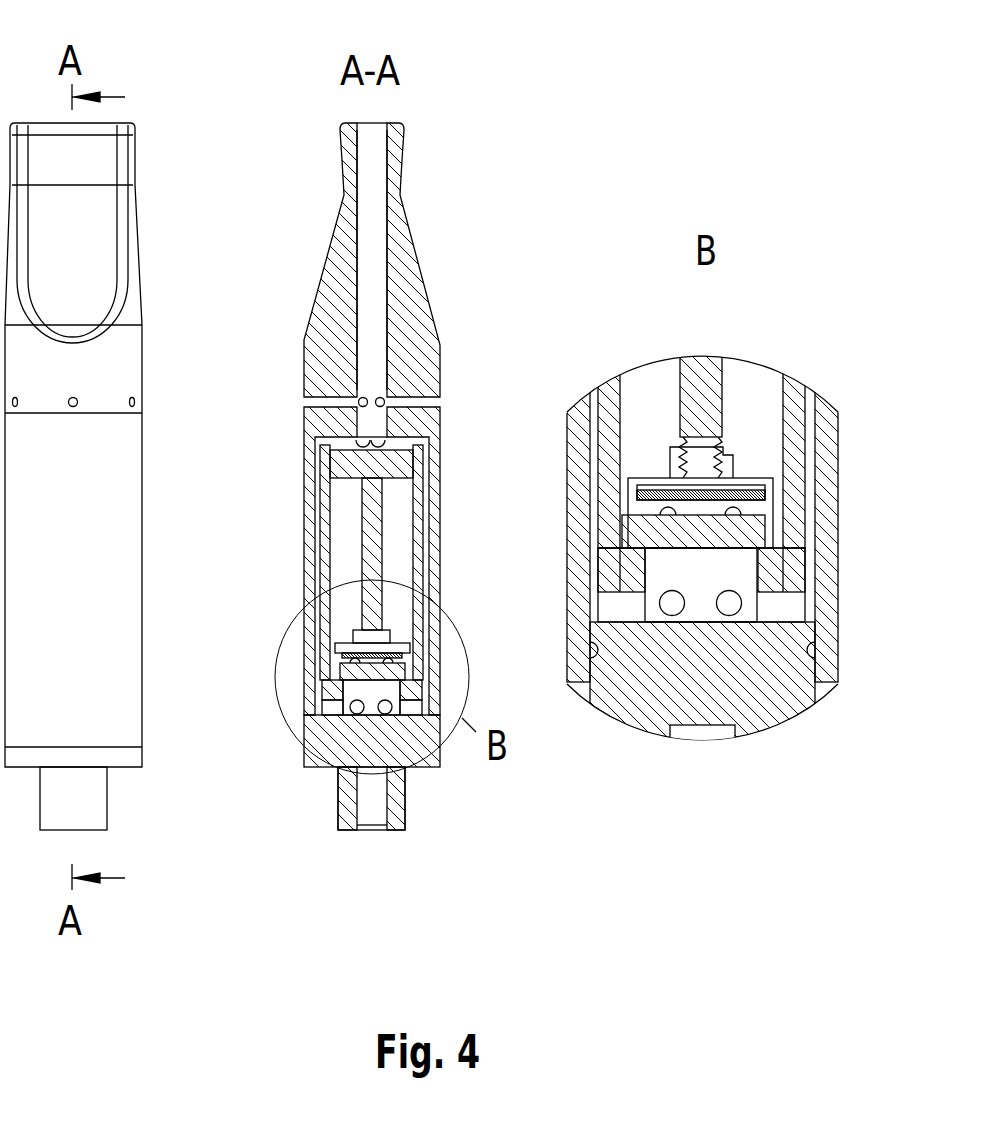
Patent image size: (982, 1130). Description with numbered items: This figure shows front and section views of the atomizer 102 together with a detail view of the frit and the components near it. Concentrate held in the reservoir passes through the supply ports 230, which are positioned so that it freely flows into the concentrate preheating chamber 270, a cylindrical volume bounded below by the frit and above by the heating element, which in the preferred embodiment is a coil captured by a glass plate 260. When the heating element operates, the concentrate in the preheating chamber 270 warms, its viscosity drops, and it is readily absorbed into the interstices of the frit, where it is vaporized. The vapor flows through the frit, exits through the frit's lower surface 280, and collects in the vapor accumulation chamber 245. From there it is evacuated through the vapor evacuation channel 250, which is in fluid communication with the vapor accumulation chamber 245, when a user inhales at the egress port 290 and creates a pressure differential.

The atomizer 102 is at (142, 450).
The egress port 290 is at (387, 123).
The supply port 230 is at (740, 512).
The glass plate 260 is at (755, 495).
The concentrate preheating chamber 270 is at (695, 510).
The vapor accumulation chamber 245 is at (748, 560).
The frit lower surface 280 is at (695, 550).
The vapor evacuation channel 250 is at (729, 616).